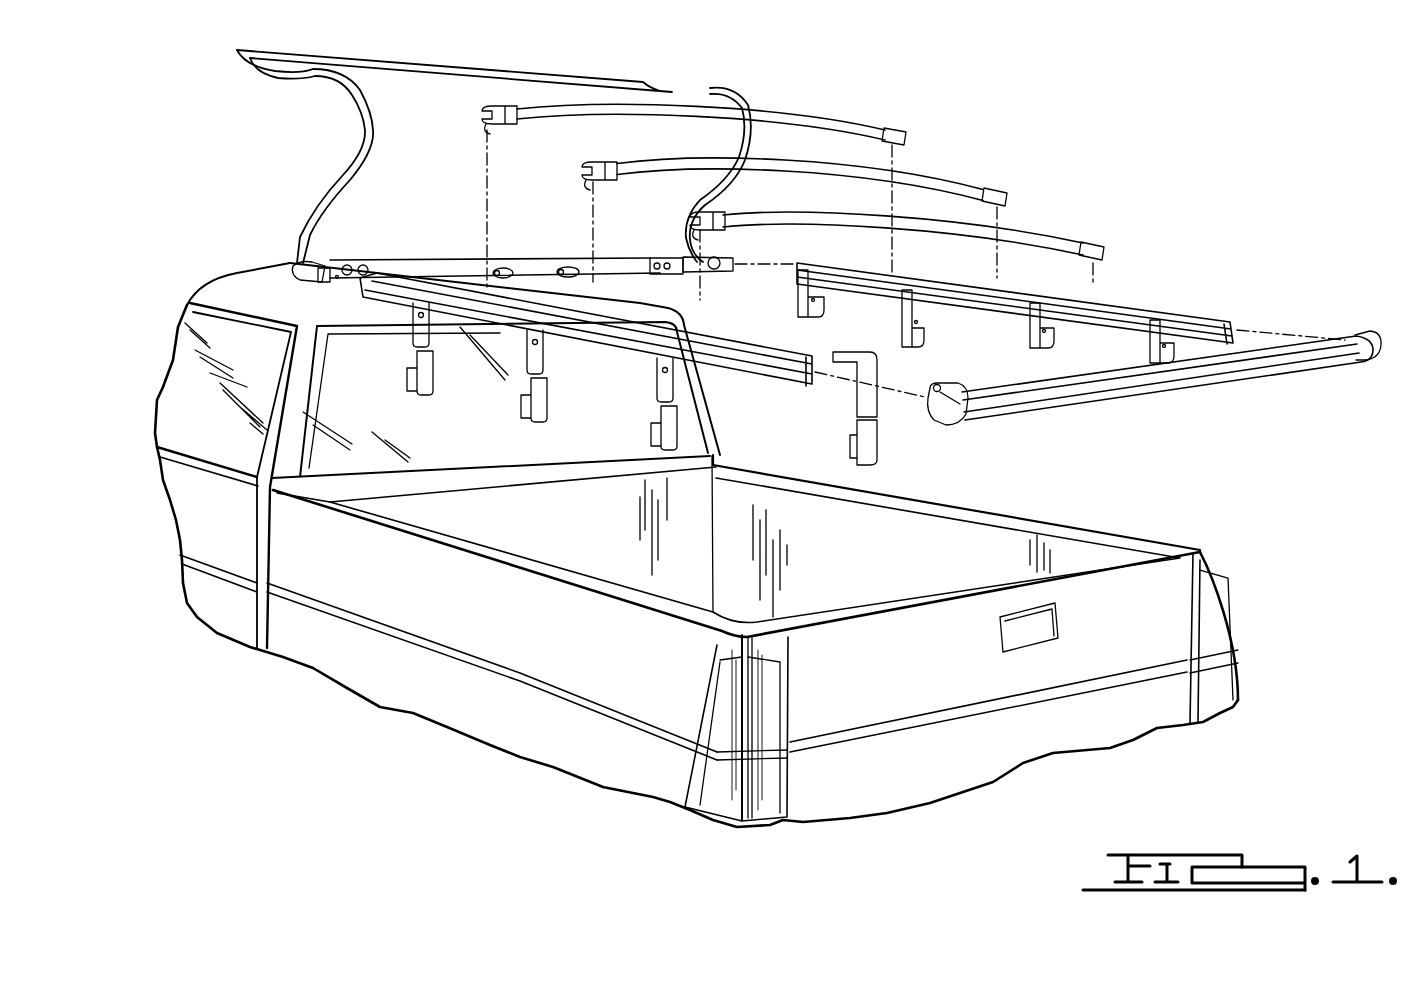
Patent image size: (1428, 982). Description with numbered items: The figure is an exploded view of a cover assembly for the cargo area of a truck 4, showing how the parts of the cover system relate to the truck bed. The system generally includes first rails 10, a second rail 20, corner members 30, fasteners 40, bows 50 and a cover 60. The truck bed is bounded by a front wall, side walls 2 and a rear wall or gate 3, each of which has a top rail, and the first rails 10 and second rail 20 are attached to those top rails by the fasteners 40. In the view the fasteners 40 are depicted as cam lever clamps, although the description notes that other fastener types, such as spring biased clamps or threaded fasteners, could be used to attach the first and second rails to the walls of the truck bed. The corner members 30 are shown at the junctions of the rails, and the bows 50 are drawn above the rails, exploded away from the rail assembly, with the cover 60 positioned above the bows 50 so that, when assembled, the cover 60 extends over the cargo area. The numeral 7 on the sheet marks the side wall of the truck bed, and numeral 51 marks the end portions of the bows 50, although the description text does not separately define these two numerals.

The side walls 2 is at (1063, 550).
The rear wall or gate 3 is at (905, 700).
The truck 4 is at (207, 532).
The side wall 7 is at (483, 648).
The first rails 10 is at (1147, 308).
The second rail 20 is at (522, 257).
The corner members 30 is at (247, 270).
The fasteners 40 is at (405, 382).
The bows 50 is at (830, 118).
The bow end hook 51 is at (503, 128).
The cover 60 is at (313, 203).